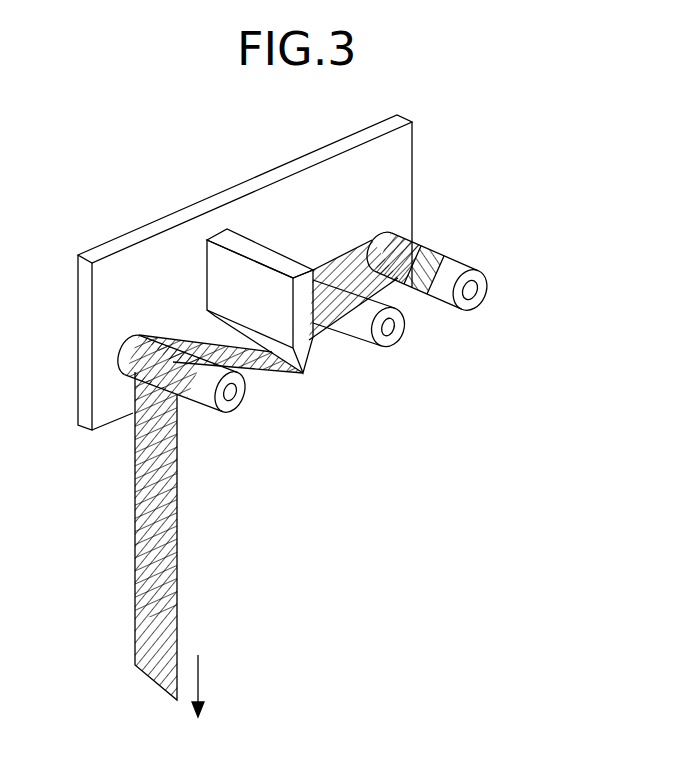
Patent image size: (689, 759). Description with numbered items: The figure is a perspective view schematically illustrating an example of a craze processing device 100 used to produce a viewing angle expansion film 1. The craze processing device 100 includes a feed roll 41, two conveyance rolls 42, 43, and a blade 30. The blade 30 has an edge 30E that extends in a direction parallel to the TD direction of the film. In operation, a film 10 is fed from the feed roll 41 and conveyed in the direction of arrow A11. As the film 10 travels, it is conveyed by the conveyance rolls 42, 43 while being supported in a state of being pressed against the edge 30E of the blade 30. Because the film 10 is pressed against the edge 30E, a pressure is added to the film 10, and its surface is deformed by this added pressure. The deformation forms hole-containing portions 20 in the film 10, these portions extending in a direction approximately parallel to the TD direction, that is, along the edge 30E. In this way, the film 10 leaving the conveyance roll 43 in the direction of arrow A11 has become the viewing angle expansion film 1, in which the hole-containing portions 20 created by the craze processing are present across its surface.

The viewing angle expansion film 1 is at (108, 552).
The craze processing device 100 is at (189, 196).
The film 10 is at (412, 293).
The hole-containing portions 20 is at (177, 550).
The blade 30 is at (285, 332).
The edge 30E is at (303, 376).
The feed roll 41 is at (485, 292).
The conveyance roll 42 is at (379, 348).
The conveyance roll 43 is at (230, 415).
The arrow A11 is at (200, 682).